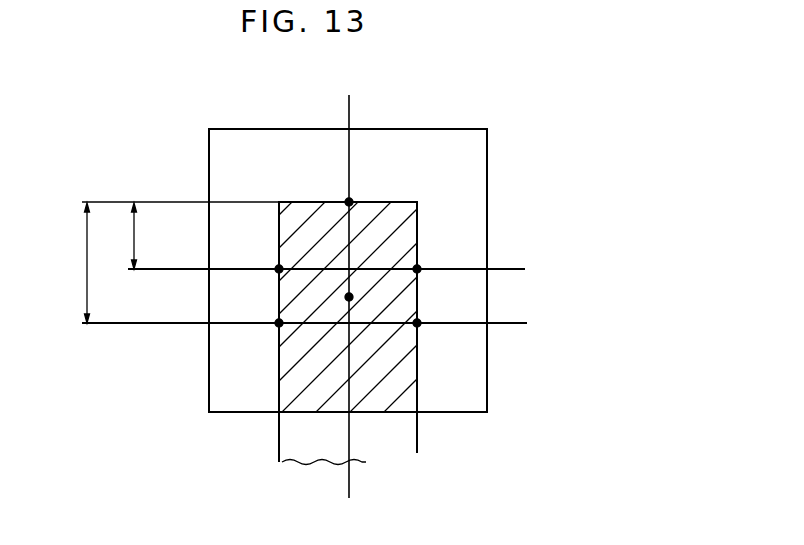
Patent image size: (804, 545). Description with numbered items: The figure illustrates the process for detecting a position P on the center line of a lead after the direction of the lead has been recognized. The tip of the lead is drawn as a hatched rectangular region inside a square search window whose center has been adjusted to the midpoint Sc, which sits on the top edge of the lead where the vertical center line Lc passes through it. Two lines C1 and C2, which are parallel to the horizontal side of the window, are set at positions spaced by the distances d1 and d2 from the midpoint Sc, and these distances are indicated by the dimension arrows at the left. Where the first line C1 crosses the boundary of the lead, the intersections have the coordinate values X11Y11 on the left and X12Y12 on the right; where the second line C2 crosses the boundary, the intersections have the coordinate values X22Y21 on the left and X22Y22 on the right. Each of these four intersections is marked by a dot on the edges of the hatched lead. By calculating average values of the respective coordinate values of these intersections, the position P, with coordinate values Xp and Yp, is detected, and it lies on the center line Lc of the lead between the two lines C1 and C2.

The midpoint Sc is at (347, 201).
The center line Lc is at (348, 157).
The first line C1 is at (374, 270).
The second line C2 is at (393, 325).
The position P is at (349, 297).
The distance d1 is at (120, 236).
The distance d2 is at (71, 263).
The coordinate values of intersection X11Y11 is at (278, 268).
The coordinate values of intersection X12Y12 is at (418, 268).
The coordinate values of intersection X22Y21 is at (277, 325).
The coordinate values of intersection X22Y22 is at (418, 324).